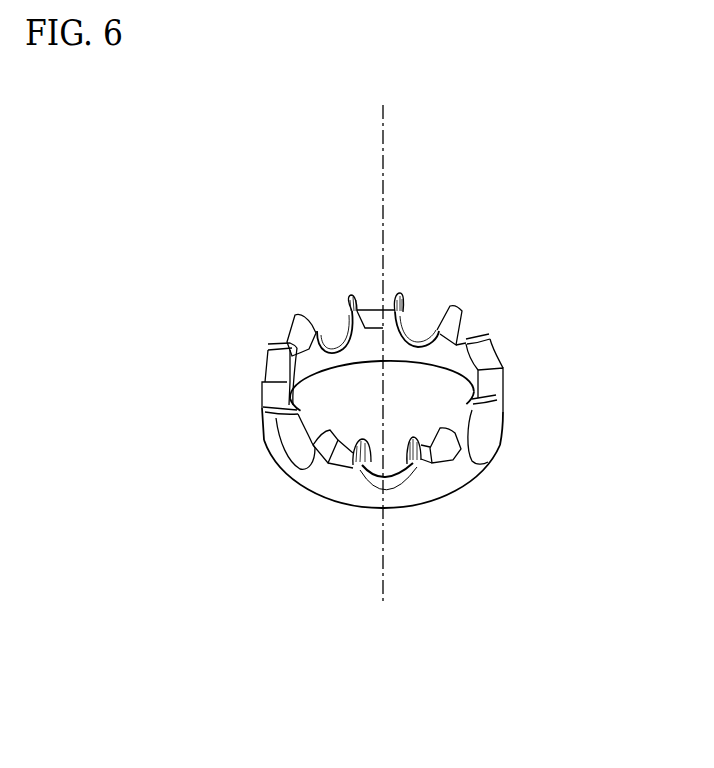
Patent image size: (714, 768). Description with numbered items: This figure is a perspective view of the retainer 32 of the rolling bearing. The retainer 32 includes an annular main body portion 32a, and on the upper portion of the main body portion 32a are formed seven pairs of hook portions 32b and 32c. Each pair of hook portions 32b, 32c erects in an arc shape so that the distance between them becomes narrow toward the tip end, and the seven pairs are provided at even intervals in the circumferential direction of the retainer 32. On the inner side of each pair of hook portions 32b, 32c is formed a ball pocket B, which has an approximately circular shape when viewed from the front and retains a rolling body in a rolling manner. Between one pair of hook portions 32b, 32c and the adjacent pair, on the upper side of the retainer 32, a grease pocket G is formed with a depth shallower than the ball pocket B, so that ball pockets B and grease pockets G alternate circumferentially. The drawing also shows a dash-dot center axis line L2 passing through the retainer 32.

The retainer 32 is at (362, 386).
The annular main body portion 32a is at (322, 484).
The hook portion 32b is at (404, 290).
The hook portion 32c is at (458, 302).
The ball pocket B is at (331, 343).
The grease pocket G is at (464, 334).
The axis L2 is at (386, 143).